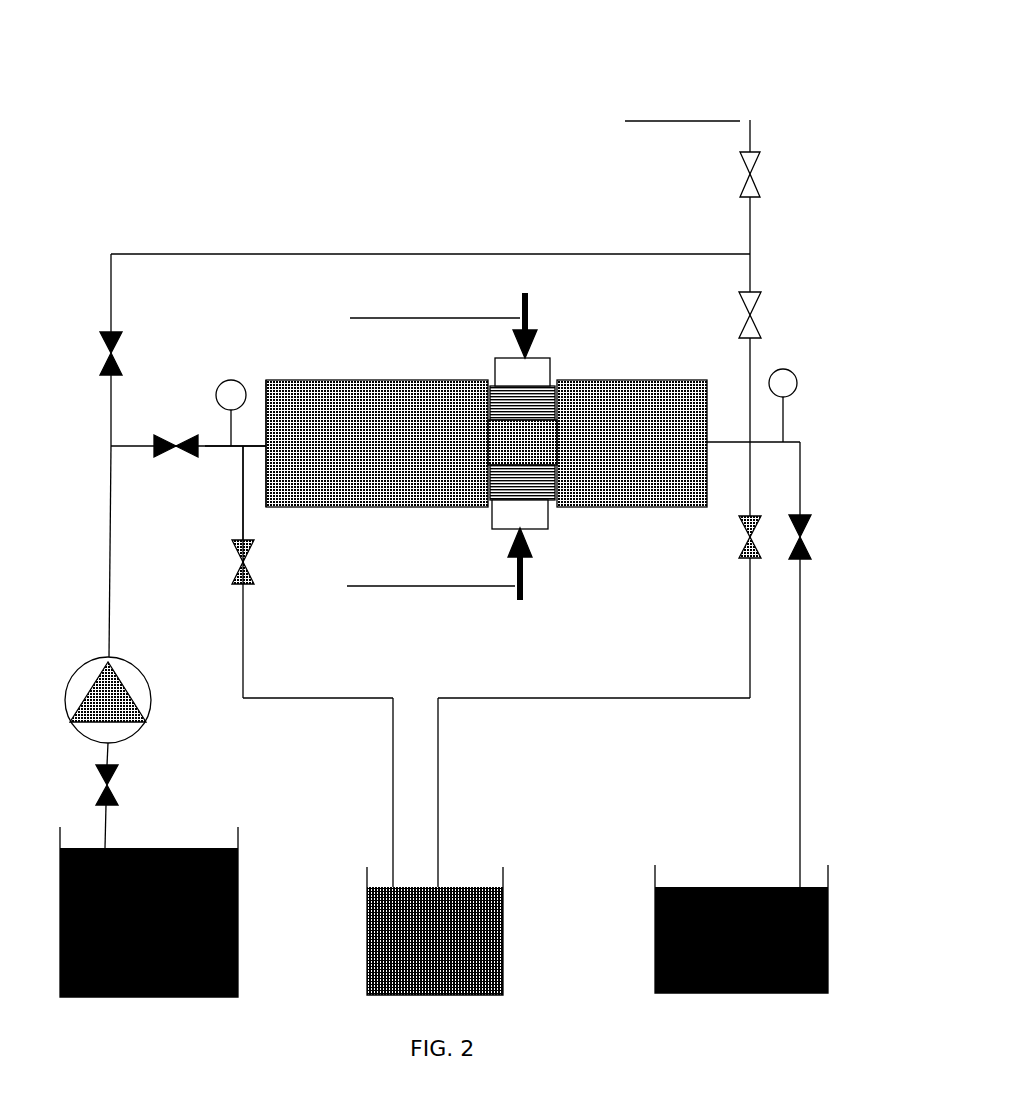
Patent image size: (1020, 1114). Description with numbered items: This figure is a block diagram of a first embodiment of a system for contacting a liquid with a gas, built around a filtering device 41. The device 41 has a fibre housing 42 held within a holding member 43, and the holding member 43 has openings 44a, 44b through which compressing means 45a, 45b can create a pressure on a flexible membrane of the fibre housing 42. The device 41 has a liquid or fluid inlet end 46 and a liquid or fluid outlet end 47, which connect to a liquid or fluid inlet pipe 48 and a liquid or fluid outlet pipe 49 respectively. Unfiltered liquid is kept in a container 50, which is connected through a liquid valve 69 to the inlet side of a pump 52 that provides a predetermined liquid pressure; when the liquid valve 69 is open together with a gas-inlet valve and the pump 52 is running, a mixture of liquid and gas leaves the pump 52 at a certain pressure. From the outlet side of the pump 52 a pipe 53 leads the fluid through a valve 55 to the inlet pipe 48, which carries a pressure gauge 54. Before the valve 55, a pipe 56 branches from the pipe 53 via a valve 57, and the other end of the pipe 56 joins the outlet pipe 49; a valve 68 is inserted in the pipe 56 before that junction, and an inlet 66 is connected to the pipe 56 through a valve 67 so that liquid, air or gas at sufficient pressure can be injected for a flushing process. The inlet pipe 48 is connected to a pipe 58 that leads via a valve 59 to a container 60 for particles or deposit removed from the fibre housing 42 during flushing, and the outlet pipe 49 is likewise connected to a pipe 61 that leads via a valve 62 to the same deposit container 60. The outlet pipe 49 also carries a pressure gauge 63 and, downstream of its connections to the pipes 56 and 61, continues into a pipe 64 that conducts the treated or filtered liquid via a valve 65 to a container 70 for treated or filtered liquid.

The device 41 is at (470, 446).
The fibre housing 42 is at (548, 515).
The holding member 43 is at (372, 510).
The opening 44a is at (486, 383).
The opening 44b is at (488, 507).
The compressing means 45a is at (540, 356).
The compressing means 45b is at (532, 540).
The liquid or fluid inlet end 46 is at (262, 381).
The liquid or fluid outlet end 47 is at (704, 384).
The liquid or fluid inlet pipe 48 is at (225, 452).
The liquid or fluid outlet pipe 49 is at (718, 452).
The container for unfiltered liquid or fluid 50 is at (204, 841).
The pump 52 is at (152, 710).
The pipe 53 is at (113, 553).
The pressure gauge 54 is at (216, 390).
The valve 55 is at (170, 460).
The pipe 56 is at (174, 262).
The valve 57 is at (126, 352).
The pipe 58 is at (235, 515).
The valve 59 is at (250, 563).
The container 60 is at (366, 900).
The pipe 61 is at (734, 622).
The valve 62 is at (740, 538).
The pressure gauge 63 is at (779, 370).
The pipe 64 is at (790, 708).
The valve 65 is at (792, 542).
The inlet 66 is at (752, 104).
The valve 67 is at (738, 174).
The valve 68 is at (738, 320).
The liquid valve 69 is at (118, 782).
The container for treated and/or filtered liquid or fluid 70 is at (654, 912).